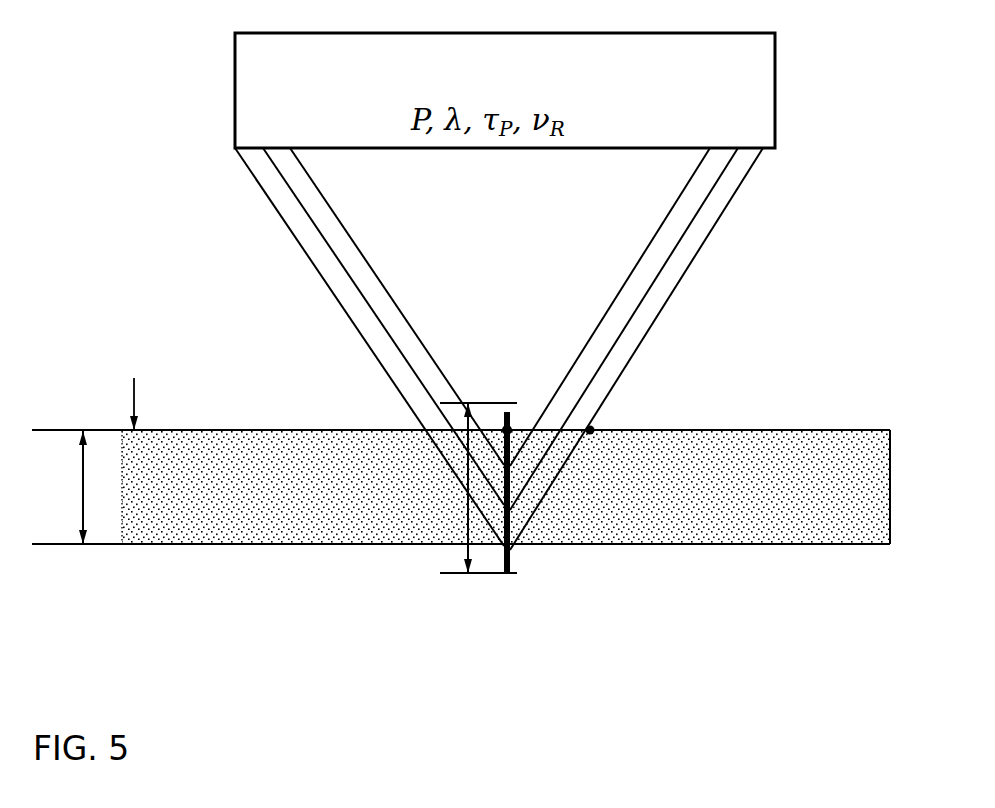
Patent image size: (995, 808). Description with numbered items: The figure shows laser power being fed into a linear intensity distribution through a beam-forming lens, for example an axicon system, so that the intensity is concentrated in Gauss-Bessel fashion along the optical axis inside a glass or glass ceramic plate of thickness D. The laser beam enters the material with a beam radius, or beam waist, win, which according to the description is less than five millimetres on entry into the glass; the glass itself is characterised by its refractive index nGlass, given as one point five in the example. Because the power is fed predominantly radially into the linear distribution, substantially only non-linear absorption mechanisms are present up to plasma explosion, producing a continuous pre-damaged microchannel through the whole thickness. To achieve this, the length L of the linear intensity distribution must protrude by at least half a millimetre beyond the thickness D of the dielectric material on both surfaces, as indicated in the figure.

The glass thickness D is at (64, 487).
The length of the linear intensity distribution L is at (478, 488).
The beam entrance width win is at (545, 433).
The glass refractive index nGlass is at (461, 487).